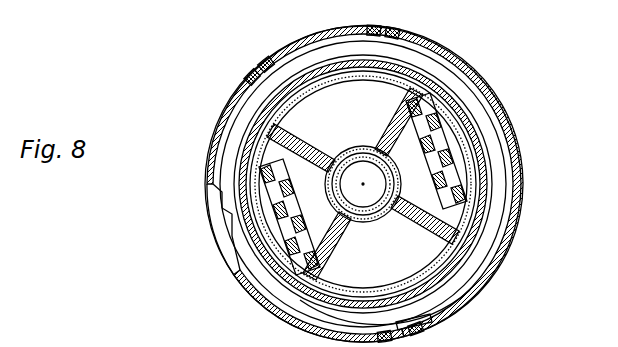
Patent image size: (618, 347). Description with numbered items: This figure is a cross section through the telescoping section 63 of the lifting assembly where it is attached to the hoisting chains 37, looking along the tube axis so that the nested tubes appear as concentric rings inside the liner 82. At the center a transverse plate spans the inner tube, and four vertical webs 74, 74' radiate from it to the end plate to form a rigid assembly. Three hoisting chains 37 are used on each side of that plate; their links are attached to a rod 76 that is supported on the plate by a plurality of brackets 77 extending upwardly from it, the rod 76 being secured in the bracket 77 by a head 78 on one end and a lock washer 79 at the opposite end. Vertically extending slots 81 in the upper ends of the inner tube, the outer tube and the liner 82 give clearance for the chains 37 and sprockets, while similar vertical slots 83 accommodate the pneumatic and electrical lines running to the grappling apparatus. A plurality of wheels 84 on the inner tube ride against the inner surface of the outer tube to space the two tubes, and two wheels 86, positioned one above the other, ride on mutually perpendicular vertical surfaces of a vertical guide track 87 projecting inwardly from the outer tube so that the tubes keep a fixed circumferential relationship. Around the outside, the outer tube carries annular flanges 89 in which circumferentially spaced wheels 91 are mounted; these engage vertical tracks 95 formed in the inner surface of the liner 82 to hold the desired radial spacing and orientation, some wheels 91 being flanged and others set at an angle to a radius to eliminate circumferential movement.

The hoisting chains 37 is at (468, 150).
The telescoping section 63 is at (440, 70).
The vertical webs 74 is at (345, 130).
The spoke 74' is at (381, 238).
The rod 76 is at (462, 178).
The brackets 77 is at (424, 134).
The head 78 is at (440, 87).
The lock washer 79 is at (496, 204).
The vertically extending slots 81 is at (262, 222).
The liner 82 is at (516, 216).
The vertical slots 83 is at (412, 302).
The wheels 84 is at (437, 268).
The wheels 86 is at (262, 141).
The vertical guide track 87 is at (268, 122).
The annular flanges 89 is at (228, 162).
The wheels 91 is at (252, 77).
The vertical tracks 95 is at (262, 68).